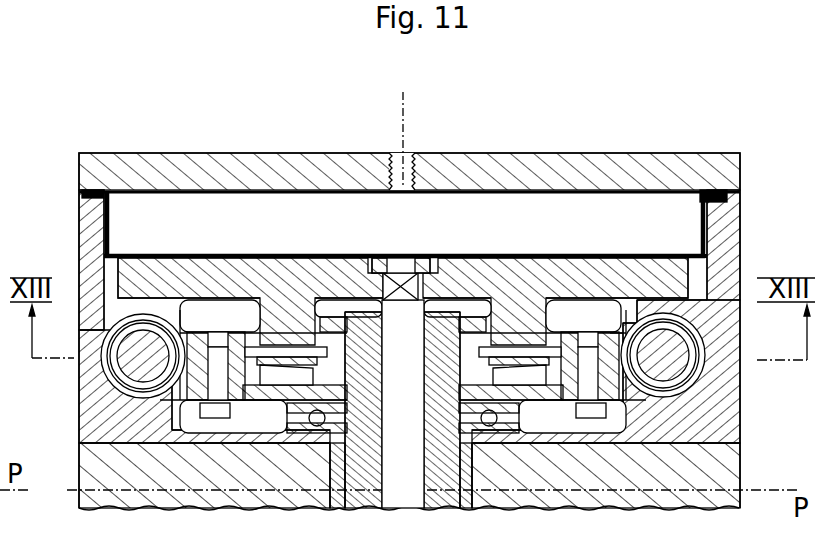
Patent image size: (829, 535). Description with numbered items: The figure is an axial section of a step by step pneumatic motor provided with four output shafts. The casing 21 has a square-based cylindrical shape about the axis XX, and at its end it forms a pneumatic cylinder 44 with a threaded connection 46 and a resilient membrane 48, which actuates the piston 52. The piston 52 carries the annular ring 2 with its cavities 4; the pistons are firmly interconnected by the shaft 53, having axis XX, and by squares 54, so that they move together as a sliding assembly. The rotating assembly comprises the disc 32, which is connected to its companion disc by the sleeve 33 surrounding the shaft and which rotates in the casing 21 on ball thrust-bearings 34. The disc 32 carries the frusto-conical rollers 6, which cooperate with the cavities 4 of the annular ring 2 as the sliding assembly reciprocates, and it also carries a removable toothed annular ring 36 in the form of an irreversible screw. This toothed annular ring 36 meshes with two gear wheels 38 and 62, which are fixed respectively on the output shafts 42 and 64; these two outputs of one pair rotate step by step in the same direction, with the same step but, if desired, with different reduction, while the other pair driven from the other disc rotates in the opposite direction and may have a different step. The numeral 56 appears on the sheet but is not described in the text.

The casing 21 is at (100, 149).
The piston 52 is at (403, 218).
The pneumatic cylinder 44 is at (203, 222).
The resilient membrane 48 is at (232, 252).
The frusto-conical roller 6 is at (275, 332).
The cavity 4 is at (290, 340).
The annular ring 2 is at (304, 345).
The threaded connection 46 is at (395, 163).
The square 54 is at (412, 265).
The toothed annular ring 36 is at (608, 333).
The gear wheel 62 is at (110, 370).
The output shaft 64 is at (133, 380).
The disc 32 is at (95, 447).
The sleeve 33 is at (358, 465).
The gear wheel 38 is at (690, 368).
The output shaft 42 is at (668, 368).
The ball thrust-bearing 34 is at (612, 447).
The shaft 53 is at (417, 440).
The sheet reference 56 is at (600, 14).